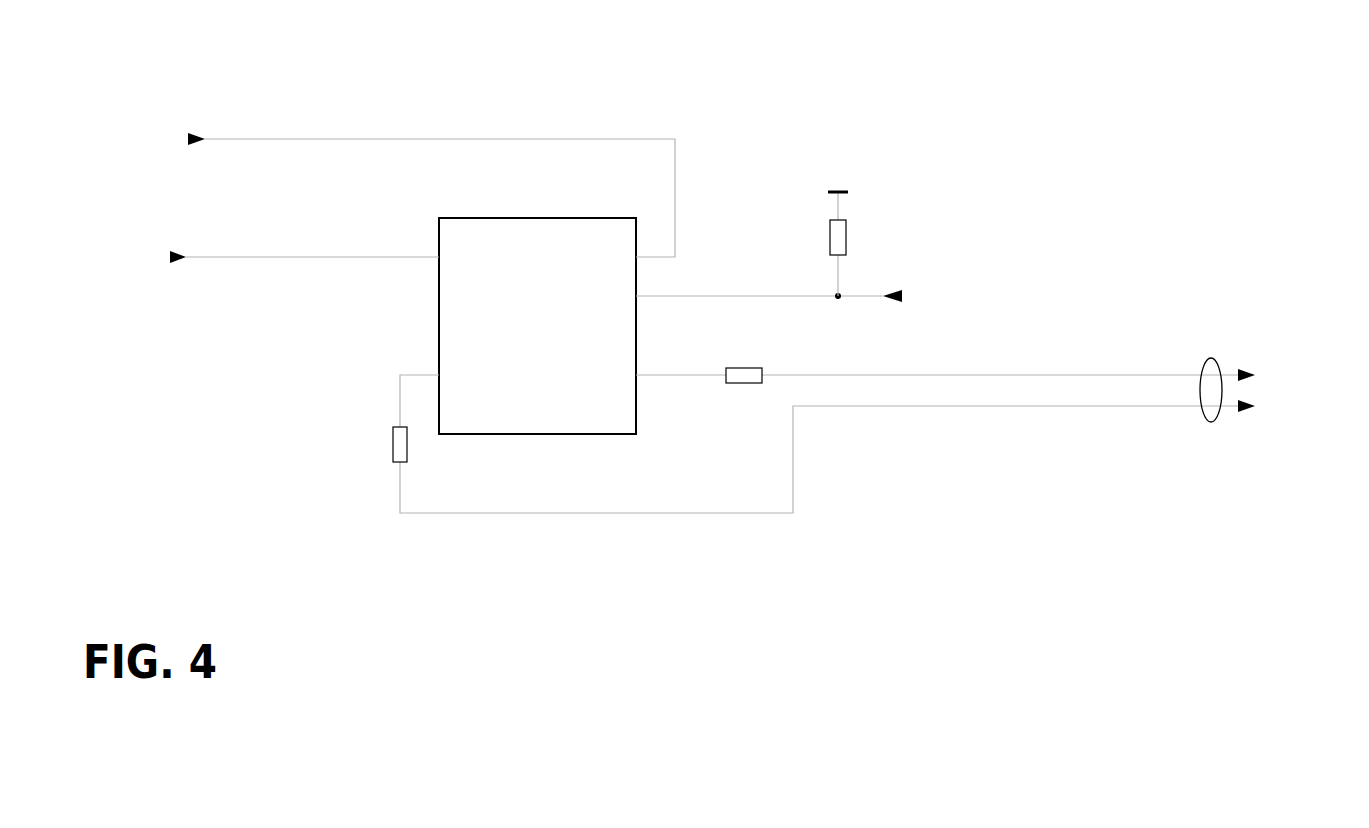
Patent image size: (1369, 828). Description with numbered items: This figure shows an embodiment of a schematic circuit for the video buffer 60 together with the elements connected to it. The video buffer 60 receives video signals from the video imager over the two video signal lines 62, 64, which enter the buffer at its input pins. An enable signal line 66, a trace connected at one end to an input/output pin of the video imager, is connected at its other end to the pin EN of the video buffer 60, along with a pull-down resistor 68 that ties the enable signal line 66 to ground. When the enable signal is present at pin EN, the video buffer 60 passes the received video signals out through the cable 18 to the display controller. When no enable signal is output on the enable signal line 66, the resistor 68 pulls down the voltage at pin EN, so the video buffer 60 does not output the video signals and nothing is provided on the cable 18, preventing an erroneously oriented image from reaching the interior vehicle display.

The cable 18 is at (1210, 422).
The video buffer 60 is at (470, 218).
The video signal line 62 is at (226, 257).
The video signal line 64 is at (273, 140).
The enable signal line 66 is at (860, 297).
The pull-down resistor 68 is at (836, 232).